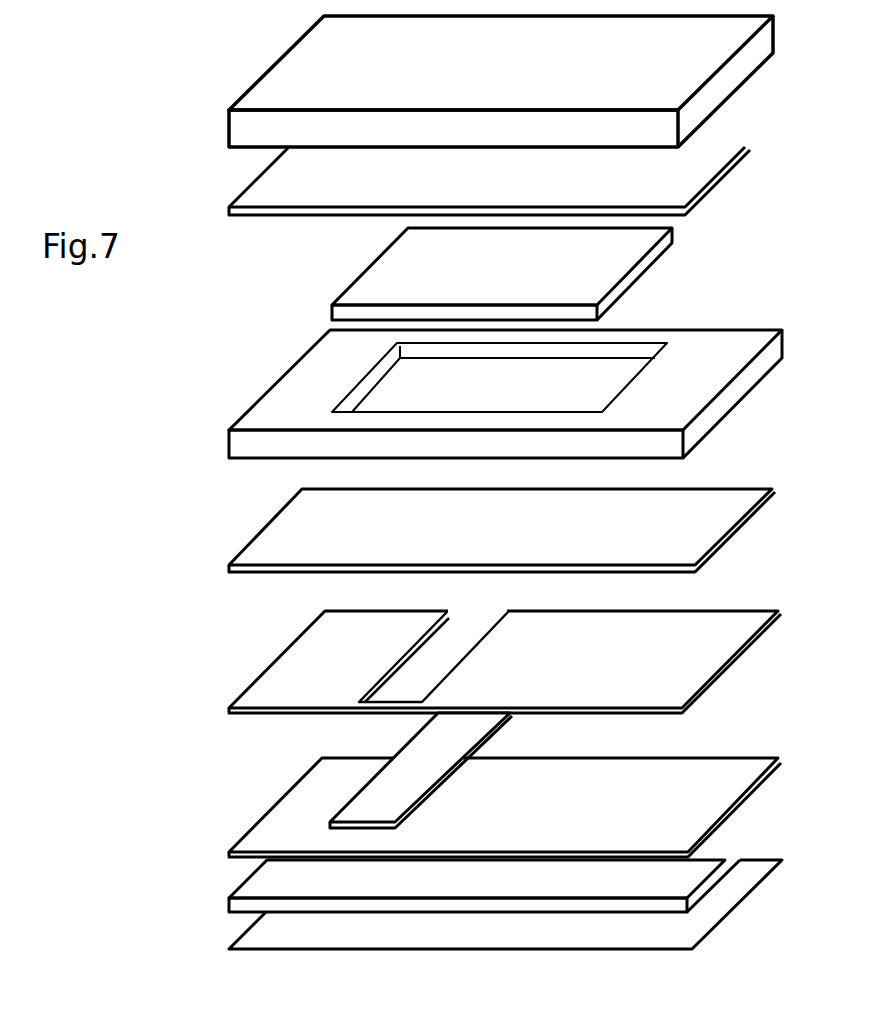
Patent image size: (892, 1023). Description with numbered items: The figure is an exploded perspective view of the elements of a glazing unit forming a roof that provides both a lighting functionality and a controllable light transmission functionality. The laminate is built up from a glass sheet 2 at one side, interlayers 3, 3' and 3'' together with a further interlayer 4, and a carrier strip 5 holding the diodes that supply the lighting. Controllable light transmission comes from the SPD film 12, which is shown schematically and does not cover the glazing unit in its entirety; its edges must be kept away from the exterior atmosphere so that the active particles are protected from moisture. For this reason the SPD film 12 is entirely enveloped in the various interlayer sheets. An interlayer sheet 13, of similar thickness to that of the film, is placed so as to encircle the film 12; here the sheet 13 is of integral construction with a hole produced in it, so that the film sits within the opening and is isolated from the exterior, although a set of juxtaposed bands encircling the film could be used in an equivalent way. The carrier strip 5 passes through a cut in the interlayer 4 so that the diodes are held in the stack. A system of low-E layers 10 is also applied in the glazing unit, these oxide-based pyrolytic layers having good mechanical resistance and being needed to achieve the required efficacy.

The interlayer 3 is at (489, 181).
The SPD film 12 is at (502, 274).
The interlayer sheet 13 is at (505, 394).
The interlayer 3'' is at (502, 530).
The interlayer 4 is at (505, 662).
The carrier strip 5 is at (421, 770).
The interlayer 3' is at (505, 807).
The glass sheet 2 is at (484, 886).
The low-E layers 10 is at (505, 904).